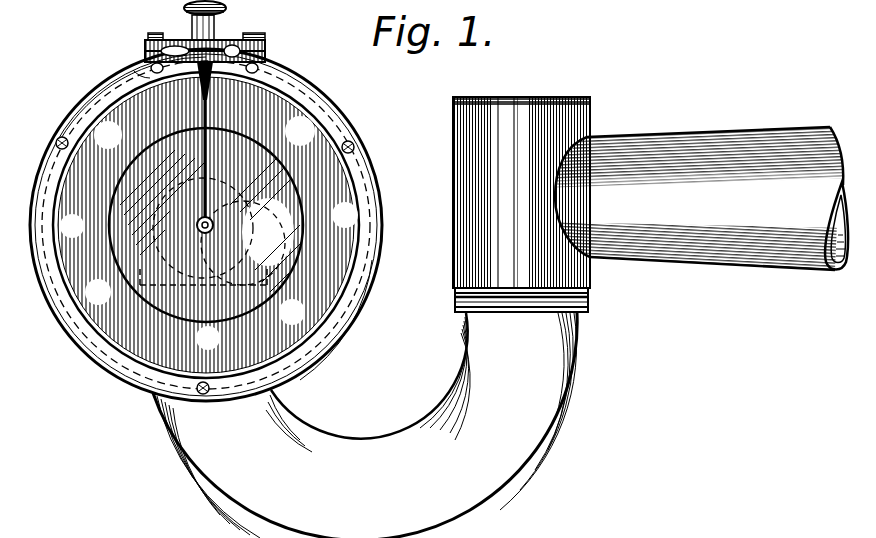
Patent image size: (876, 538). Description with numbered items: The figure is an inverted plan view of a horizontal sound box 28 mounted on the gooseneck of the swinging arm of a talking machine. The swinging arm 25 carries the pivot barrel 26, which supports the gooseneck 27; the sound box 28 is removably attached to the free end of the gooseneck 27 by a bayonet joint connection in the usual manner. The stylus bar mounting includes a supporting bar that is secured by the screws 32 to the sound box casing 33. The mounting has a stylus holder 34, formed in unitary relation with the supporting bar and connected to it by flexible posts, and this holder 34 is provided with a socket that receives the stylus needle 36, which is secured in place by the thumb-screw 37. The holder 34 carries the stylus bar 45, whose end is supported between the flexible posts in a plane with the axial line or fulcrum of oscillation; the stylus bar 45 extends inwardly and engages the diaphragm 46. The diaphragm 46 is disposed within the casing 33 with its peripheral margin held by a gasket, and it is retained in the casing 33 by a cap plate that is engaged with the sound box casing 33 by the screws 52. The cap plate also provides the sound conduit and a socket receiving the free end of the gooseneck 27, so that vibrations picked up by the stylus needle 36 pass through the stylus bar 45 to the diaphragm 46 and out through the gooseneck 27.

The swinging arm 25 is at (732, 160).
The pivot barrel 26 is at (518, 118).
The gooseneck 27 is at (378, 442).
The sound box 28 is at (383, 226).
The screws 32 is at (152, 37).
The sound box casing 33 is at (307, 336).
The stylus holder 34 is at (266, 48).
The stylus needle 36 is at (182, 67).
The thumb-screw 37 is at (222, 8).
The stylus bar 45 is at (205, 114).
The diaphragm 46 is at (288, 208).
The screws 52 is at (58, 137).